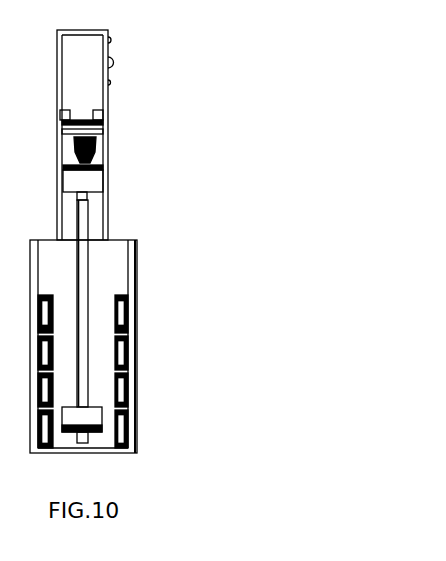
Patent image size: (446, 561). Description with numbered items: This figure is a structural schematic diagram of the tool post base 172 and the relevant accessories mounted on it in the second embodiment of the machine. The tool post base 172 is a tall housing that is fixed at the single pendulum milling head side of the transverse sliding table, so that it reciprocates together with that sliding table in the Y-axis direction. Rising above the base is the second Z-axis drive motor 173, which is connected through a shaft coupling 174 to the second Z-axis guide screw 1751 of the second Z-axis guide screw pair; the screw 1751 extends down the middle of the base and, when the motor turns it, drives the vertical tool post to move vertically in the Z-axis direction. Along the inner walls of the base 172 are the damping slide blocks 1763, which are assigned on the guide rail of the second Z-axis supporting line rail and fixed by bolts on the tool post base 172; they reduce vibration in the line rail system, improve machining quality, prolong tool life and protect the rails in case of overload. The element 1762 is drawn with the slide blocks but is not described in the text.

The tool post base 172 is at (105, 440).
The second Z-axis drive motor 173 is at (115, 85).
The shaft coupling 174 is at (113, 140).
The second Z-axis guide screw 1751 is at (85, 223).
The upper sealing ring 1762 is at (128, 300).
The damping slide blocks 1763 is at (125, 368).